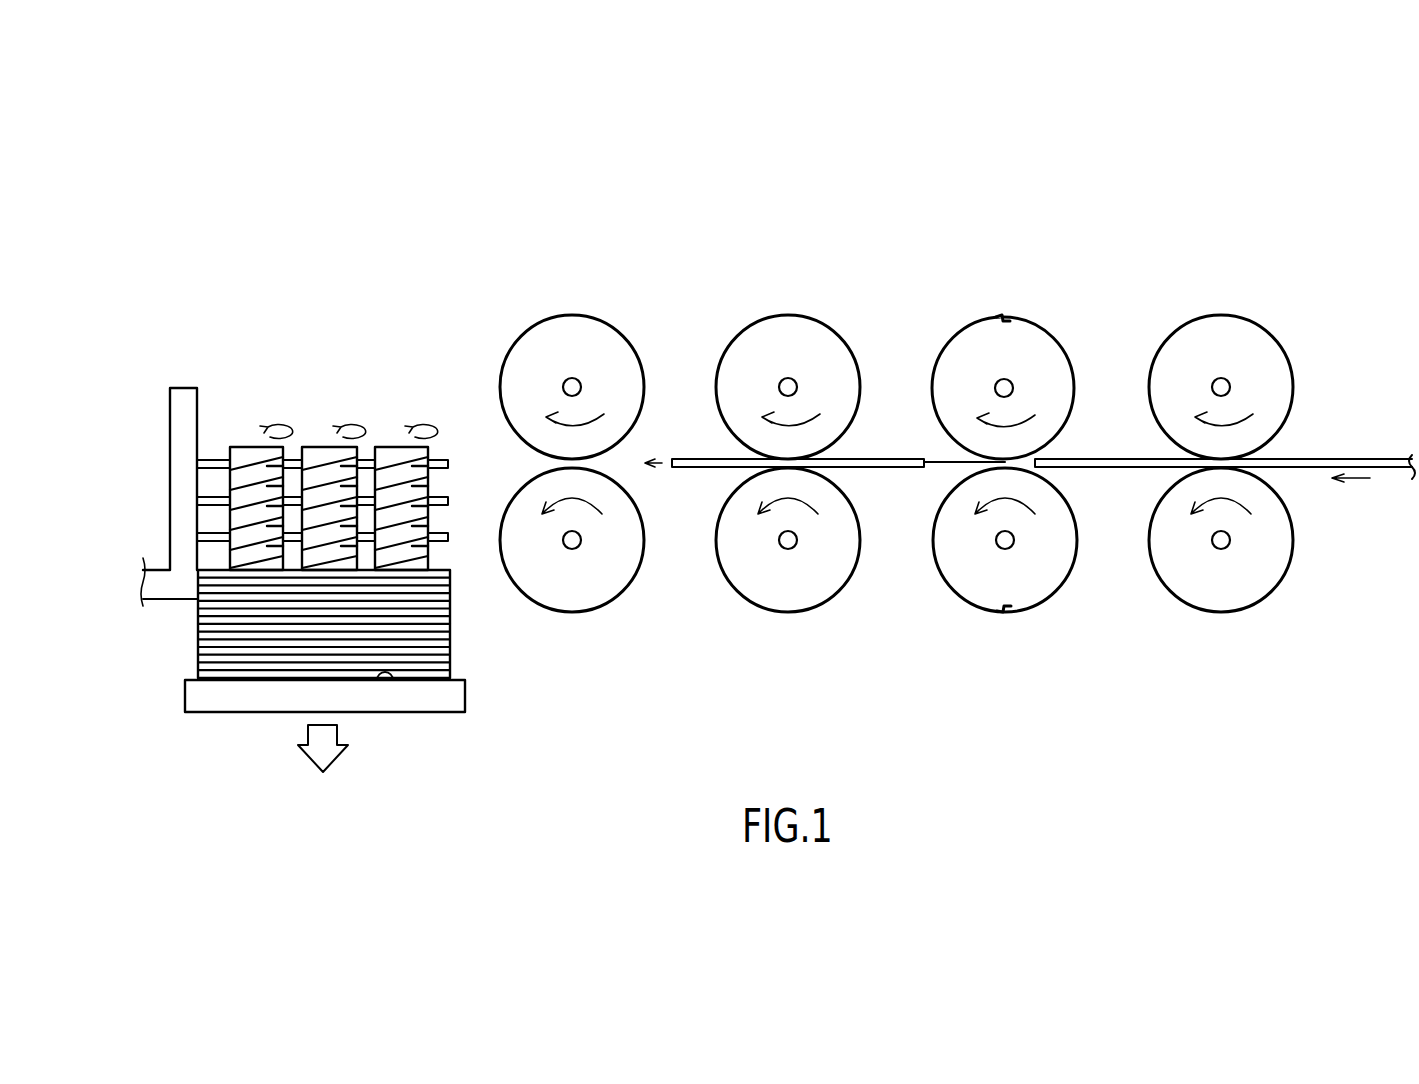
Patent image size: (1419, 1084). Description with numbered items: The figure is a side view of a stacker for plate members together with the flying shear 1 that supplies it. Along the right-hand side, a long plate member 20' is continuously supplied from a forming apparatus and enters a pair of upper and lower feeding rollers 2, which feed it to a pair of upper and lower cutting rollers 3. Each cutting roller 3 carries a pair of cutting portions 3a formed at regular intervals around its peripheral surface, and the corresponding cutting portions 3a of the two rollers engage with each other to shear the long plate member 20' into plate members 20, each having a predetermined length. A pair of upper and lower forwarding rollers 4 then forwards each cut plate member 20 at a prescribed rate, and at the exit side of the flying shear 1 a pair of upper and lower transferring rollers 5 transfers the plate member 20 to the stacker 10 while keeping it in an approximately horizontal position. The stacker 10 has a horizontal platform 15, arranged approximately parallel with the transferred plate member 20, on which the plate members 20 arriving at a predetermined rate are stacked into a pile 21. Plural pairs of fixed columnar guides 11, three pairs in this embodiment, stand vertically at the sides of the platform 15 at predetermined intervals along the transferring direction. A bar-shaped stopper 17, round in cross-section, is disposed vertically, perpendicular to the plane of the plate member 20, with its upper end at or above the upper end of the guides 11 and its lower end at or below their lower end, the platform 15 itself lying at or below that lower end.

The flying shear 1 is at (1070, 233).
The feeding rollers 2 is at (1173, 362).
The cutting rollers 3 is at (956, 360).
The cutting portions 3a is at (1007, 318).
The forwarding rollers 4 is at (734, 354).
The transferring rollers 5 is at (608, 346).
The stacker 10 is at (346, 342).
The columnar guides 11 is at (237, 458).
The platform 15 is at (392, 688).
The stopper 17 is at (170, 410).
The plate member 20 is at (561, 518).
The long plate member 20' is at (1223, 434).
The stack of sheets 21 is at (452, 570).